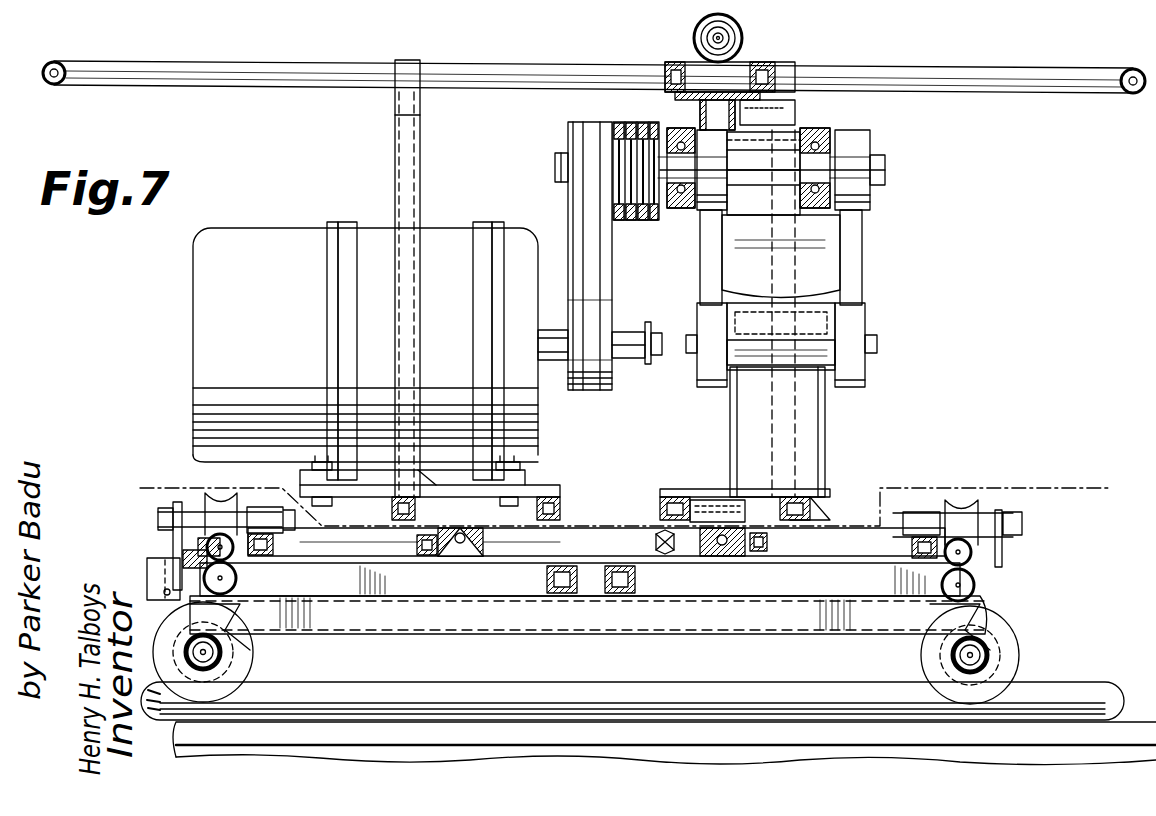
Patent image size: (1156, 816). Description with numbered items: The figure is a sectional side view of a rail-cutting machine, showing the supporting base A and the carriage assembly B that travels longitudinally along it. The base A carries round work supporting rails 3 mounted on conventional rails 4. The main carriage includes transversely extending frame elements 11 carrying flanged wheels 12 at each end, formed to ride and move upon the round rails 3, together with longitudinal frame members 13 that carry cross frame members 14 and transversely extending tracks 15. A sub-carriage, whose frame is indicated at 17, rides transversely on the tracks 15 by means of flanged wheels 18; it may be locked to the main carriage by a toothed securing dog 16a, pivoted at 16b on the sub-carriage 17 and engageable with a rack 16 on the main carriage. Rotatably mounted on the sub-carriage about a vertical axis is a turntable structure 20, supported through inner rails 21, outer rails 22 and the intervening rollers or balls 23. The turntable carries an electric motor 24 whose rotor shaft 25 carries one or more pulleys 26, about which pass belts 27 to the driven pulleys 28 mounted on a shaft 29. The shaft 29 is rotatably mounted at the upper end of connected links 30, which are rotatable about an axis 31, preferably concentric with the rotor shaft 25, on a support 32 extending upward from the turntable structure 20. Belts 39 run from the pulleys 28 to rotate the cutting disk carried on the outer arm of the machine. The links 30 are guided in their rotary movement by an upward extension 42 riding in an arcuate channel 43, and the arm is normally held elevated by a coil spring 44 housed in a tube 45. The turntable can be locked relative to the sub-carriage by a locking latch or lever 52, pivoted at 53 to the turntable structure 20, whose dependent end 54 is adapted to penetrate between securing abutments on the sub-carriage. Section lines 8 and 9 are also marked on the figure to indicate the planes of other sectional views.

The work supporting rails 3 is at (552, 700).
The conventional rails 4 is at (495, 742).
The section line 8- 8 is at (140, 486).
The section arrows 9 is at (722, 462).
The transversely extending frame elements 11 is at (222, 652).
The flanged wheels 12 is at (245, 664).
The longitudinal extending frame members 13 is at (406, 618).
The cross frame members 14 is at (238, 579).
The transversely extending tracks 15 is at (234, 538).
The rack 16 is at (200, 520).
The toothed securing dog 16a is at (183, 550).
The pivot 16b is at (167, 596).
The sub-carriage frame 17 is at (840, 542).
The flanged wheels 18 is at (225, 506).
The turntable structure 20 is at (592, 500).
The inner rails 21 is at (470, 556).
The outer rails 22 is at (436, 557).
The rollers or balls 23 is at (462, 534).
The motor 24 is at (268, 242).
The rotor shaft 25 is at (632, 334).
The pulley 26 is at (608, 392).
The belt 27 is at (594, 270).
The driven pulleys 28 is at (664, 130).
The shaft 29 is at (763, 172).
The connected links 30 is at (862, 257).
The axis 31 is at (878, 341).
The support 32 is at (826, 416).
The belts 39 is at (630, 221).
The upward extension 42 is at (712, 118).
The arcuate channel 43 is at (690, 95).
The coil spring 44 is at (743, 36).
The tube 45 is at (699, 33).
The locking latch or lever 52 is at (733, 422).
The pivot 53 is at (672, 498).
The dependent end 54 is at (712, 524).
The supporting base A is at (1074, 684).
The carriage and assembly B is at (830, 448).